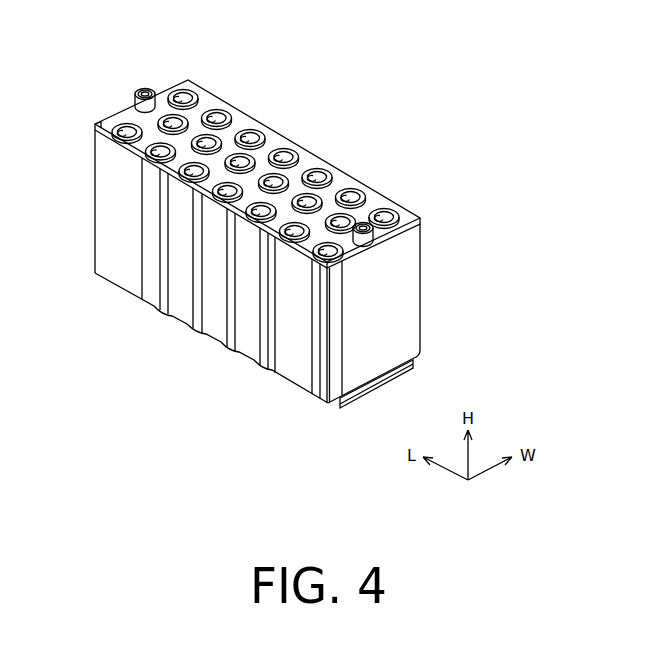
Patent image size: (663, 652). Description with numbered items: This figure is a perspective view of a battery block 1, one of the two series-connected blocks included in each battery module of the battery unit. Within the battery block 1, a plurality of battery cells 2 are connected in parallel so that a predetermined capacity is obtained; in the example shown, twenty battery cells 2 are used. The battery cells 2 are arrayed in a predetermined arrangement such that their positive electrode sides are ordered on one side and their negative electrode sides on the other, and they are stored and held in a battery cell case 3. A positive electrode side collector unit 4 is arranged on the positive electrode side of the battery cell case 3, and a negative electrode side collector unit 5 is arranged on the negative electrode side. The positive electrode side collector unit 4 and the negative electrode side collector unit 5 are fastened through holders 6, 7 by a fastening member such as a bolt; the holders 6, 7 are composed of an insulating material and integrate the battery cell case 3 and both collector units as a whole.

The battery block 1 is at (250, 242).
The battery cell 2 is at (307, 400).
The battery cell case 3 is at (298, 373).
The positive electrode side collector unit 4 is at (342, 172).
The negative electrode side collector unit 5 is at (227, 346).
The holder 6 is at (403, 310).
The holder 7 is at (94, 208).